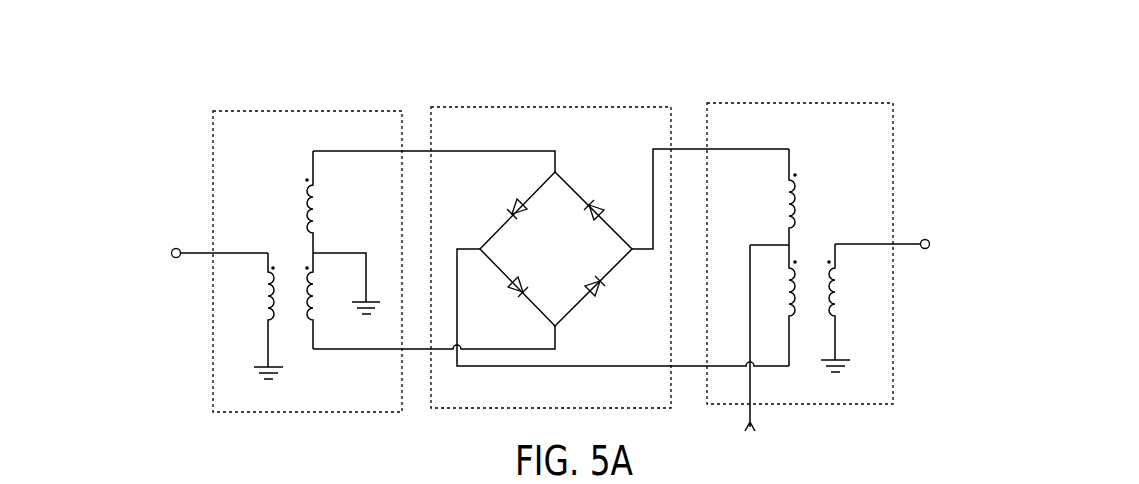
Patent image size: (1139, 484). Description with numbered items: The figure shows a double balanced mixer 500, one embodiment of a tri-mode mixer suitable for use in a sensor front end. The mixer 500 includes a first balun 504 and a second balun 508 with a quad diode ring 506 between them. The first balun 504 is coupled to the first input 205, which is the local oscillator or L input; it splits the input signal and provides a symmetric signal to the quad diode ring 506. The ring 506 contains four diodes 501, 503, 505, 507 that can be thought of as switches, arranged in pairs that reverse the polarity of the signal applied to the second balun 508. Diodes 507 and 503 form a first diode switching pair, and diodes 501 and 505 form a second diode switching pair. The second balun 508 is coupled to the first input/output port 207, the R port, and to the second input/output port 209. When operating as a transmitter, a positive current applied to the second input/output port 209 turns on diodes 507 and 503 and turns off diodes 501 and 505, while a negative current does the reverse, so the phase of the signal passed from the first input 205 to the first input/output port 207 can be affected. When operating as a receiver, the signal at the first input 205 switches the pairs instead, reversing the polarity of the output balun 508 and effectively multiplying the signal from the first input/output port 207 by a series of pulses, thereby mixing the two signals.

The double balanced mixer 500 is at (1027, 119).
The first balun 504 is at (246, 122).
The quad diode ring 506 is at (500, 114).
The second balun 508 is at (877, 107).
The diode 501 is at (510, 207).
The diode 503 is at (511, 292).
The diode 505 is at (600, 292).
The diode 507 is at (605, 207).
The first input 205 is at (171, 250).
The first input/output port 207 is at (930, 243).
The second input/output port 209 is at (757, 427).